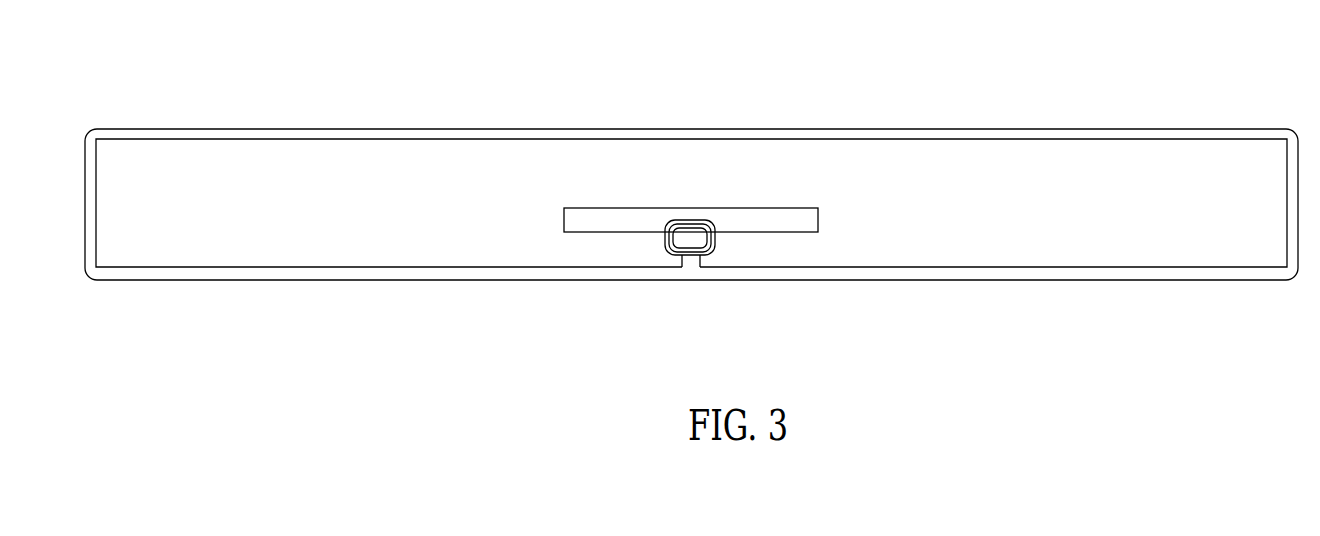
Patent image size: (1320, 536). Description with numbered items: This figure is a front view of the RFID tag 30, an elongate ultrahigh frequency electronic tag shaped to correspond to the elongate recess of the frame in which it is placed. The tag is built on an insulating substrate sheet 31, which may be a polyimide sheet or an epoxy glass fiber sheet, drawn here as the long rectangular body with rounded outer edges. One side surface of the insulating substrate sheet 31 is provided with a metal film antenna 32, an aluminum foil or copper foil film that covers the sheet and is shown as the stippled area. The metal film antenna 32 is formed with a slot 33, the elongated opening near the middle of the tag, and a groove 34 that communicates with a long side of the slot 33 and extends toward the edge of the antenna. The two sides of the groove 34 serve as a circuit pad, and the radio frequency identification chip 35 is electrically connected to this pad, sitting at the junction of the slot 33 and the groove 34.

The RFID tag 30 is at (1155, 122).
The insulating substrate sheet 31 is at (1068, 140).
The metal film antenna 32 is at (920, 173).
The slot 33 is at (772, 222).
The groove 34 is at (692, 262).
The radio frequency identification chip 35 is at (683, 228).